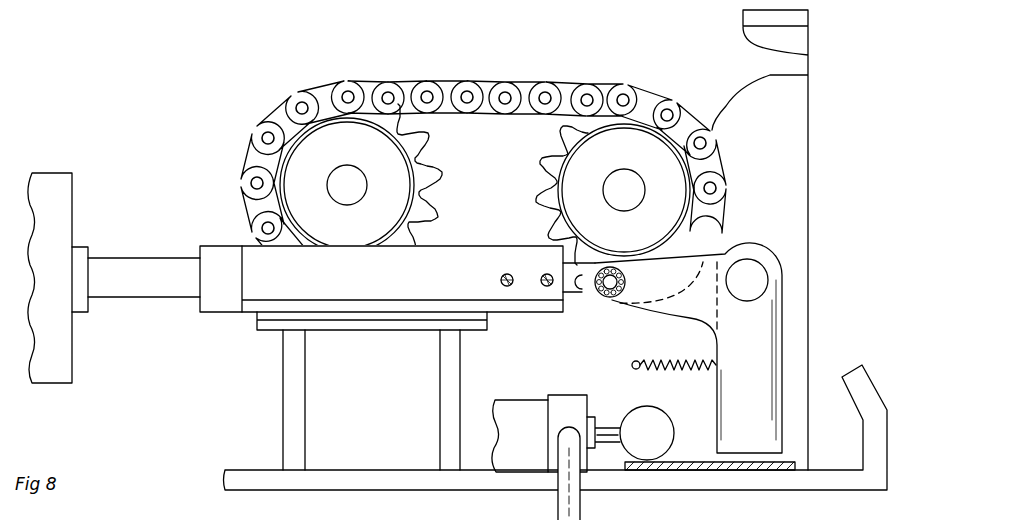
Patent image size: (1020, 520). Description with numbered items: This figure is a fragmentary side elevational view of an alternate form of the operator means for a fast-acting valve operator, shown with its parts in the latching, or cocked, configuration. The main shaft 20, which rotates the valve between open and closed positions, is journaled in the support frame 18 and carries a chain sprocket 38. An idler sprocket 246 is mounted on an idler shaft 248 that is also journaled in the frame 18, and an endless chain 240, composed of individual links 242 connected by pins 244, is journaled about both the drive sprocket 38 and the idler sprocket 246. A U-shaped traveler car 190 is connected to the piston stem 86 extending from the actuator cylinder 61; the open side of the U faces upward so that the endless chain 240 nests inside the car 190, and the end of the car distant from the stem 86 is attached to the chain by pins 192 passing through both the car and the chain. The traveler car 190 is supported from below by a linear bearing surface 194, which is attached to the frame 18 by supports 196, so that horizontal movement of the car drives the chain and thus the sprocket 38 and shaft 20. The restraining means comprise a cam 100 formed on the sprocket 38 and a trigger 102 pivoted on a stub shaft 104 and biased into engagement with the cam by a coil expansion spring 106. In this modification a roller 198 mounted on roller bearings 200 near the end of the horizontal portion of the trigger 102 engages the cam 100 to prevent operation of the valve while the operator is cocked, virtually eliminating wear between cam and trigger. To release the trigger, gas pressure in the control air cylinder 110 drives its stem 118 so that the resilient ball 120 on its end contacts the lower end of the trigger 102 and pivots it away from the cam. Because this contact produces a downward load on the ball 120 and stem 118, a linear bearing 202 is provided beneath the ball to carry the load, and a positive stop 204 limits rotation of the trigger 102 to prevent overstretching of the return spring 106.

The support frame 18 is at (790, 97).
The main shaft 20 is at (628, 178).
The chain sprocket 38 is at (648, 237).
The cylinder 61 is at (55, 172).
The piston stem 86 is at (160, 258).
The cam 100 is at (697, 237).
The trigger 102 is at (762, 395).
The stub shaft 104 is at (756, 289).
The coil expansion spring 106 is at (692, 370).
The control air cylinder 110 is at (530, 441).
The stem 118 is at (614, 420).
The resilient ball 120 is at (661, 443).
The traveler car 190 is at (460, 252).
The pins 192 is at (507, 287).
The linear bearing surface 194 is at (357, 313).
The supports 196 is at (285, 396).
The roller 198 is at (625, 281).
The roller bearings 200 is at (608, 300).
The linear bearing 202 is at (690, 470).
The positive stop 204 is at (855, 372).
The endless chain 240 is at (483, 141).
The links 242 is at (366, 93).
The pins 244 is at (427, 91).
The idler sprocket 246 is at (376, 237).
The idler shaft 248 is at (368, 148).